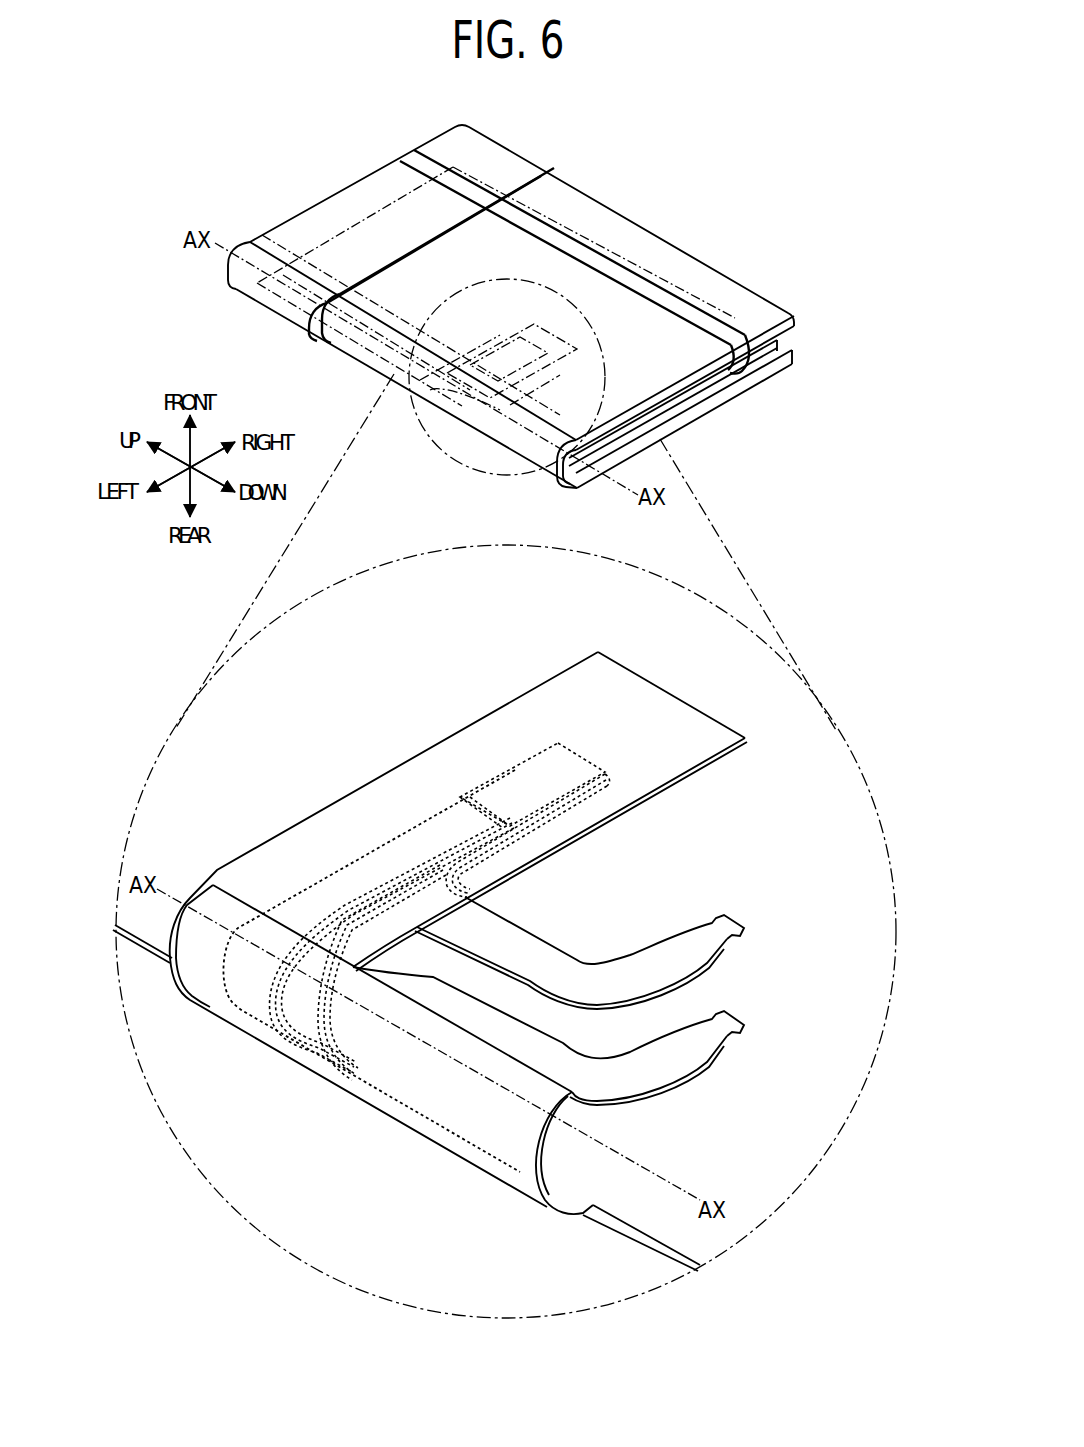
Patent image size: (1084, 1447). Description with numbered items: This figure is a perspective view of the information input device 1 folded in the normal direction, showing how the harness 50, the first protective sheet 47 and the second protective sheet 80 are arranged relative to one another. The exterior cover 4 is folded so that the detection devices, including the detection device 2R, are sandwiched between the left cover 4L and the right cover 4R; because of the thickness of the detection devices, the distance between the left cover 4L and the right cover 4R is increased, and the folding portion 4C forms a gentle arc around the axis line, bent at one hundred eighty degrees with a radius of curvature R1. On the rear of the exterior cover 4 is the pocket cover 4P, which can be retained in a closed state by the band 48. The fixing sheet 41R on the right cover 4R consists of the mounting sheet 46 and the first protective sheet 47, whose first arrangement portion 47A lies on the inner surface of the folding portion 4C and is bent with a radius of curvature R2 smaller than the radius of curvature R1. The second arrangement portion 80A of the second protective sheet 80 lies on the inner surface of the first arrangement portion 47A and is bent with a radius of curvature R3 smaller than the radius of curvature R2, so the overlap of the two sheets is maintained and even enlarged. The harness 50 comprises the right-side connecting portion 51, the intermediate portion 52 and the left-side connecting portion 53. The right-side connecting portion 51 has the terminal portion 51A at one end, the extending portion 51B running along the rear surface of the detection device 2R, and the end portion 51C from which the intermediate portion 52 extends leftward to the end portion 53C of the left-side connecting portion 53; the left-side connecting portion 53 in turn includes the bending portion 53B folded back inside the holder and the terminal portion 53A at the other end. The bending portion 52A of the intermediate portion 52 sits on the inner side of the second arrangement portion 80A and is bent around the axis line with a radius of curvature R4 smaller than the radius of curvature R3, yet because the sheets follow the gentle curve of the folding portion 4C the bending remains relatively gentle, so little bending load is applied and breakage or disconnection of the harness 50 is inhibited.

The information input device 1 is at (593, 151).
The exterior cover 4 is at (433, 137).
The band 48 is at (573, 249).
The pocket cover 4P is at (633, 249).
The detection device 2R is at (764, 359).
The left cover 4L is at (700, 380).
The right cover 4R is at (700, 414).
The folding portion 4C is at (575, 486).
The radius of curvature R1 is at (628, 462).
The second protective sheet 80 is at (509, 706).
The second arrangement portion 80A is at (165, 975).
The fixing sheet 41R is at (406, 1099).
The first protective sheet 47 is at (492, 1183).
The first arrangement portion 47A is at (450, 1120).
The mounting sheet 46 is at (598, 1221).
The harness 50 is at (475, 928).
The right-side connecting portion 51 is at (524, 947).
The terminal portion 51A is at (722, 1013).
The extending portion 51B is at (517, 1036).
The end portion 51C is at (402, 993).
The intermediate portion 52 is at (352, 948).
The bending portion 52A is at (250, 1007).
The left-side connecting portion 53 is at (518, 882).
The terminal portion 53A is at (719, 916).
The bending portion 53B is at (600, 758).
The end portion 53C is at (450, 818).
The radius of curvature R2 is at (593, 1138).
The radius of curvature R3 is at (371, 1010).
The radius of curvature R4 is at (320, 983).